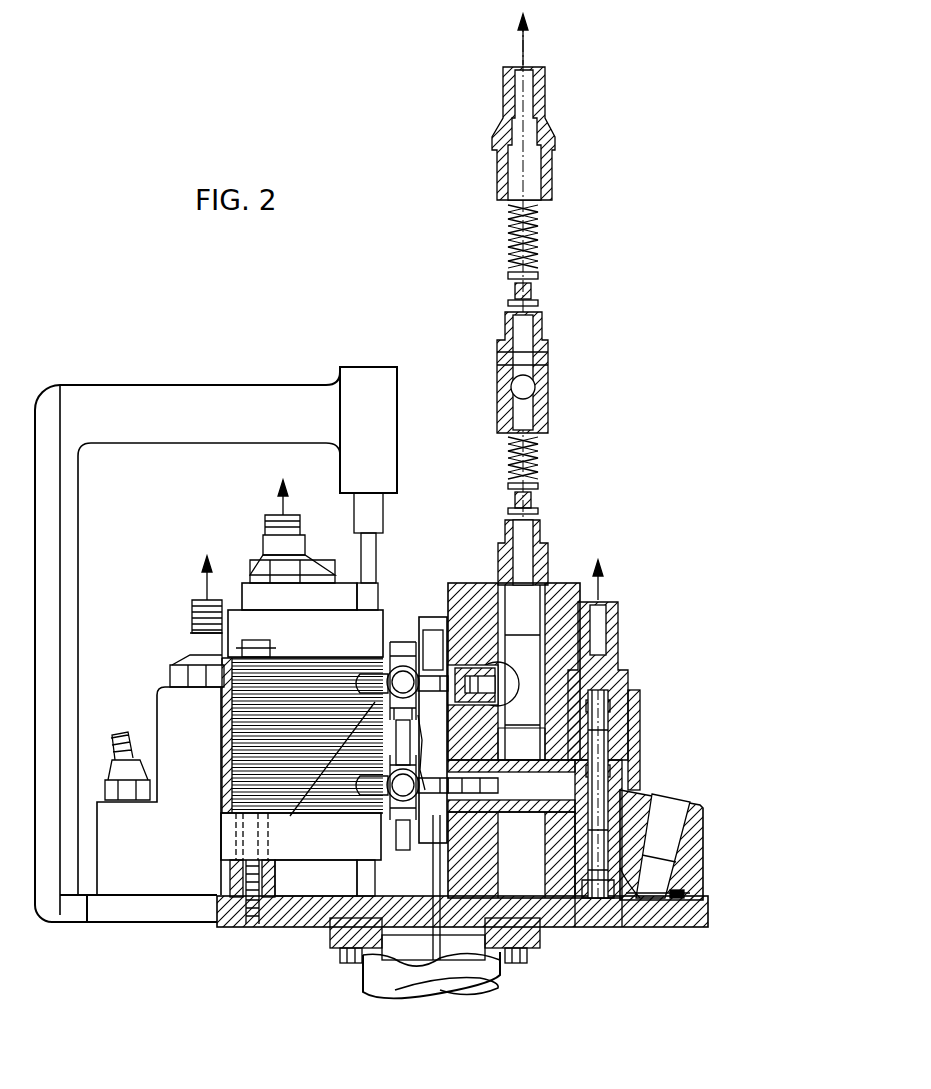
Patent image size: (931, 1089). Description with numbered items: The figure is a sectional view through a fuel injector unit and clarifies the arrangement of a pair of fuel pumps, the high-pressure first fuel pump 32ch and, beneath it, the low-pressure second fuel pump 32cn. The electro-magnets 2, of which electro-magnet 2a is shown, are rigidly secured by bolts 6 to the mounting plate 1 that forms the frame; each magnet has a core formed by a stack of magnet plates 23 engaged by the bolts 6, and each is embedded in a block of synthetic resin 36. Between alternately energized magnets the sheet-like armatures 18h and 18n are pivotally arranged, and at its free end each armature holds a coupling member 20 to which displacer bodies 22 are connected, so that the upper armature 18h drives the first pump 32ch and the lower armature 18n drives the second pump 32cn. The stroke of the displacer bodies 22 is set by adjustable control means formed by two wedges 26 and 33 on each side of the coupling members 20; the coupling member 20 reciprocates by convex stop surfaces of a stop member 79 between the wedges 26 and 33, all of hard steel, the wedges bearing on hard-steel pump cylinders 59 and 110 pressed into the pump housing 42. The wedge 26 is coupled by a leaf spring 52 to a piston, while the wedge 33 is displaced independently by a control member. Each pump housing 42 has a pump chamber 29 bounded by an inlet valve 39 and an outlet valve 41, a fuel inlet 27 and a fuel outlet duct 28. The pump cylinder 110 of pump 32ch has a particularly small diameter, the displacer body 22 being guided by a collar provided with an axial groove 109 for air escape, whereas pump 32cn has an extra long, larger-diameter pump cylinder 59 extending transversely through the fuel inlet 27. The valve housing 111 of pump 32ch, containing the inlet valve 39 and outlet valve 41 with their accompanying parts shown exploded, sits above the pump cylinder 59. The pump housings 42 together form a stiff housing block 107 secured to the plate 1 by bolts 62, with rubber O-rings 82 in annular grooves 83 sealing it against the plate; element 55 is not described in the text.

The mounting plate 1 is at (170, 918).
The electro-magnets 2 is at (630, 770).
The electro-magnet 2a is at (220, 812).
The bolts 6 is at (270, 646).
The armature 18h is at (400, 660).
The armature 18n is at (404, 848).
The coupling member 20 is at (386, 675).
The displacer body 22 is at (512, 675).
The magnet plates 23 is at (222, 765).
The wedge 26 is at (431, 616).
The fuel inlet 27 is at (596, 906).
The fuel outlet duct 28 is at (195, 600).
The pump chamber 29 is at (523, 696).
The first fuel pump 32ch is at (490, 588).
The second fuel pump 32cn is at (465, 505).
The wedge 33 is at (376, 590).
The block of synthetic resin 36 is at (230, 858).
The inlet valve 39 is at (514, 506).
The outlet valve 41 is at (514, 297).
The pump housing 42 is at (447, 600).
The leaf spring 52 is at (430, 950).
The lever 55 is at (431, 752).
The pump cylinder 59 is at (528, 770).
The bolts 62 is at (136, 800).
The stop member 79 is at (292, 815).
The O-rings 82 is at (680, 905).
The annular grooves 83 is at (684, 893).
The housing block 107 is at (124, 872).
The axial groove 109 is at (434, 650).
The pump cylinder 110 is at (500, 660).
The valve housing 111 is at (262, 585).